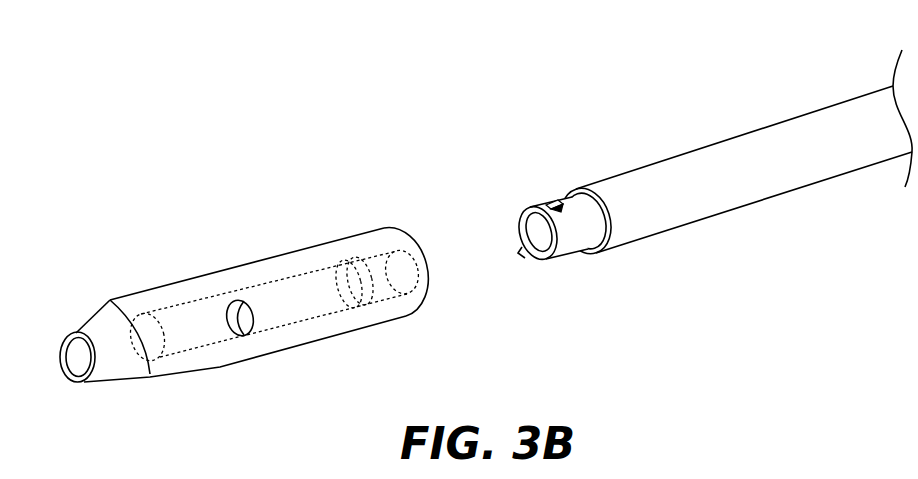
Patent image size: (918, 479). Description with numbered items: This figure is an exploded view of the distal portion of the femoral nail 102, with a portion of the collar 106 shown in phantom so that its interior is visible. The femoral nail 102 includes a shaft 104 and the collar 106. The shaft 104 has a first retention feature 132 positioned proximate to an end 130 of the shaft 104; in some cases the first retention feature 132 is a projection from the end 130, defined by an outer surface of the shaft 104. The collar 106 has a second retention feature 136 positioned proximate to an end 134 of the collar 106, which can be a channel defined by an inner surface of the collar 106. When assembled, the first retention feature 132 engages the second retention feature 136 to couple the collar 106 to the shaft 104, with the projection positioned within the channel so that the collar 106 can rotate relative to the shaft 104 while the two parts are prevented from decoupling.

The femoral nail 102 is at (284, 80).
The shaft 104 is at (705, 147).
The collar 106 is at (207, 273).
The end of the shaft 130 is at (566, 260).
The first retention feature 132 is at (547, 198).
The end of the collar 134 is at (413, 240).
The second retention feature 136 is at (366, 306).